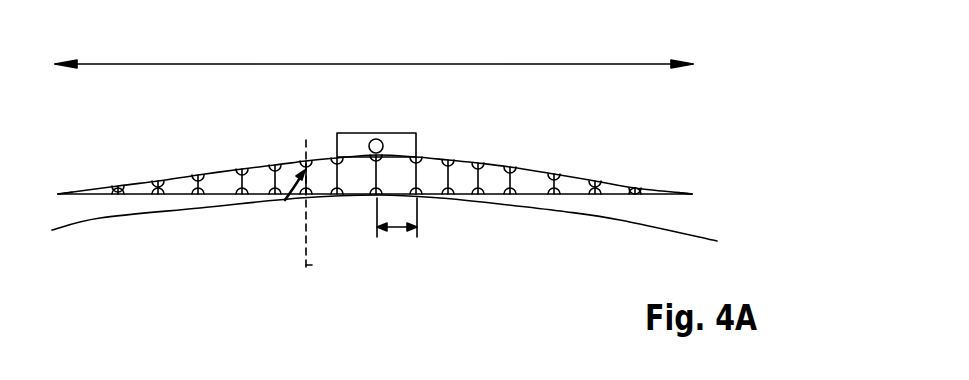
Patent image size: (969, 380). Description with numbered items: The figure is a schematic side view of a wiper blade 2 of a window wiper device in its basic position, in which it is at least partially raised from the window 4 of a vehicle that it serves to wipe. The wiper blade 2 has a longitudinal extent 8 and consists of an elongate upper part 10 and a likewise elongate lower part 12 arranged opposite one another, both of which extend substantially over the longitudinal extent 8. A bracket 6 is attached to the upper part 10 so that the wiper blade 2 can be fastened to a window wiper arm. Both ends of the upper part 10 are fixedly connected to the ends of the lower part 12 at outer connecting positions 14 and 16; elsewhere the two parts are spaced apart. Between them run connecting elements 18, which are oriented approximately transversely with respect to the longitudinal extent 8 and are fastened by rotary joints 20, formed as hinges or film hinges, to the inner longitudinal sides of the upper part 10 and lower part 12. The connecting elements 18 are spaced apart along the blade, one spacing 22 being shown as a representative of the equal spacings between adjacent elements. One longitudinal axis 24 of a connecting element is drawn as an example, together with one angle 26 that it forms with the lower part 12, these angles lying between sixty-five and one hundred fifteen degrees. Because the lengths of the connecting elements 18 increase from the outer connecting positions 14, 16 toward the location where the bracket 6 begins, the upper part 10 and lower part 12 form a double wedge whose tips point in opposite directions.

The wiper blade 2 is at (379, 165).
The window 4 is at (618, 222).
The bracket 6 is at (404, 141).
The longitudinal extent 8 is at (376, 64).
The upper part 10 is at (213, 172).
The lower part 12 is at (534, 200).
The outer connecting position 14 is at (58, 194).
The outer connecting position 16 is at (692, 194).
The connecting elements 18 is at (274, 190).
The rotary joints 20 is at (277, 167).
The spacing 22 is at (396, 232).
The longitudinal axis 24 is at (317, 269).
The angle 26 is at (288, 203).